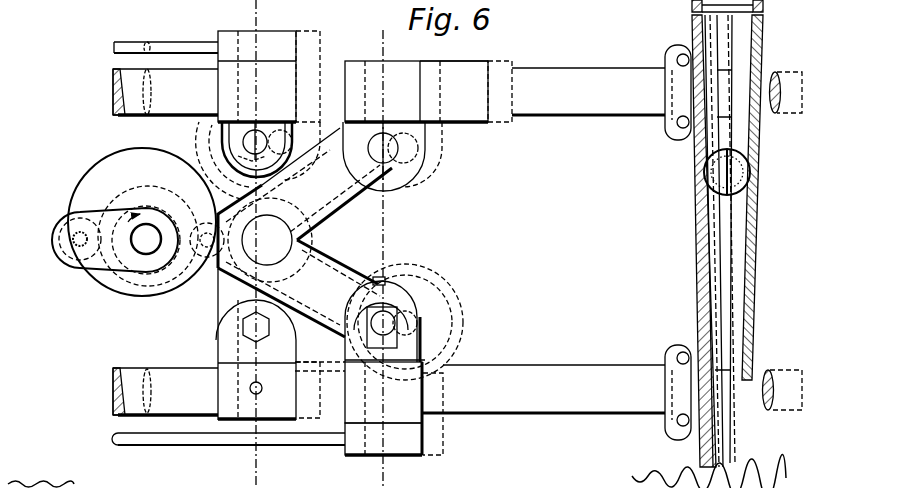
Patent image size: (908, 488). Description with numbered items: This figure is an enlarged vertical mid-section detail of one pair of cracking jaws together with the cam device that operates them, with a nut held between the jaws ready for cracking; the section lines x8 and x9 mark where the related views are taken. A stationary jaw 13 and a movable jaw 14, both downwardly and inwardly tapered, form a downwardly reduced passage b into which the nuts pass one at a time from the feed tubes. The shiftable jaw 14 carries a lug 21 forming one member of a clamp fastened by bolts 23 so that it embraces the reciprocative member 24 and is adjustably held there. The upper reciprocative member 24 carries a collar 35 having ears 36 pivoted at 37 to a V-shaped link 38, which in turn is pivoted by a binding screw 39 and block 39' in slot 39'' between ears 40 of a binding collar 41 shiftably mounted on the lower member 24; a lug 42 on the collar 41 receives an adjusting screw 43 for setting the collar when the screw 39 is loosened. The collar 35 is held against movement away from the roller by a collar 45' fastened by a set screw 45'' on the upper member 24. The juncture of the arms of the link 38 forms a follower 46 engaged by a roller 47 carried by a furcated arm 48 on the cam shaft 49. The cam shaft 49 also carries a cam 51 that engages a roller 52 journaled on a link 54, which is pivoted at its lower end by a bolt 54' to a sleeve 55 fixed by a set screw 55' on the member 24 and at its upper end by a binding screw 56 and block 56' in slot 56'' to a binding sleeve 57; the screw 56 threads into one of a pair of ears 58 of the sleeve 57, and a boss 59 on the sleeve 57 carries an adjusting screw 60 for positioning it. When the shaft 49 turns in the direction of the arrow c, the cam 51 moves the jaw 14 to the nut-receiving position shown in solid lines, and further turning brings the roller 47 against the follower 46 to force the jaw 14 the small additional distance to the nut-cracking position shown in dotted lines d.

The section line x8 is at (278, 12).
The section line x9 is at (395, 35).
The boss 59 is at (276, 35).
The binding sleeve 57 is at (232, 79).
The adjusting screw 60 is at (136, 48).
The reciprocative member 24 is at (130, 92).
The collar 35 is at (398, 78).
The collar 45' is at (472, 53).
The set screw 45'' is at (446, 54).
The ears 36 is at (405, 175).
The pivot 37 is at (398, 147).
The ears 58 is at (205, 140).
The binding screw 56 is at (218, 141).
The block 56' is at (224, 148).
The slot 56'' is at (297, 175).
The V-shaped link 38 is at (330, 190).
The roller 52 is at (334, 229).
The ears 40 is at (412, 285).
The binding screw 39 is at (432, 301).
The block 39' is at (407, 347).
The slot 39'' is at (407, 361).
The binding collar 41 is at (397, 395).
The lug 42 is at (408, 443).
The link 54 is at (260, 344).
The bolt 54' is at (241, 327).
The sleeve 55 is at (236, 364).
The set screw 55' is at (219, 387).
The adjusting screw 43 is at (178, 437).
The cam 51 is at (104, 182).
The furcated arm 48 is at (106, 268).
The cam shaft 49 is at (146, 250).
The roller 47 is at (58, 258).
The arrow c is at (128, 227).
The follower 46 is at (214, 290).
The dotted lines d is at (702, 240).
The passage b is at (748, 41).
The stationary jaw 13 is at (762, 152).
The movable jaw 14 is at (706, 166).
The lug 21 is at (672, 72).
The bolt 23 is at (683, 54).